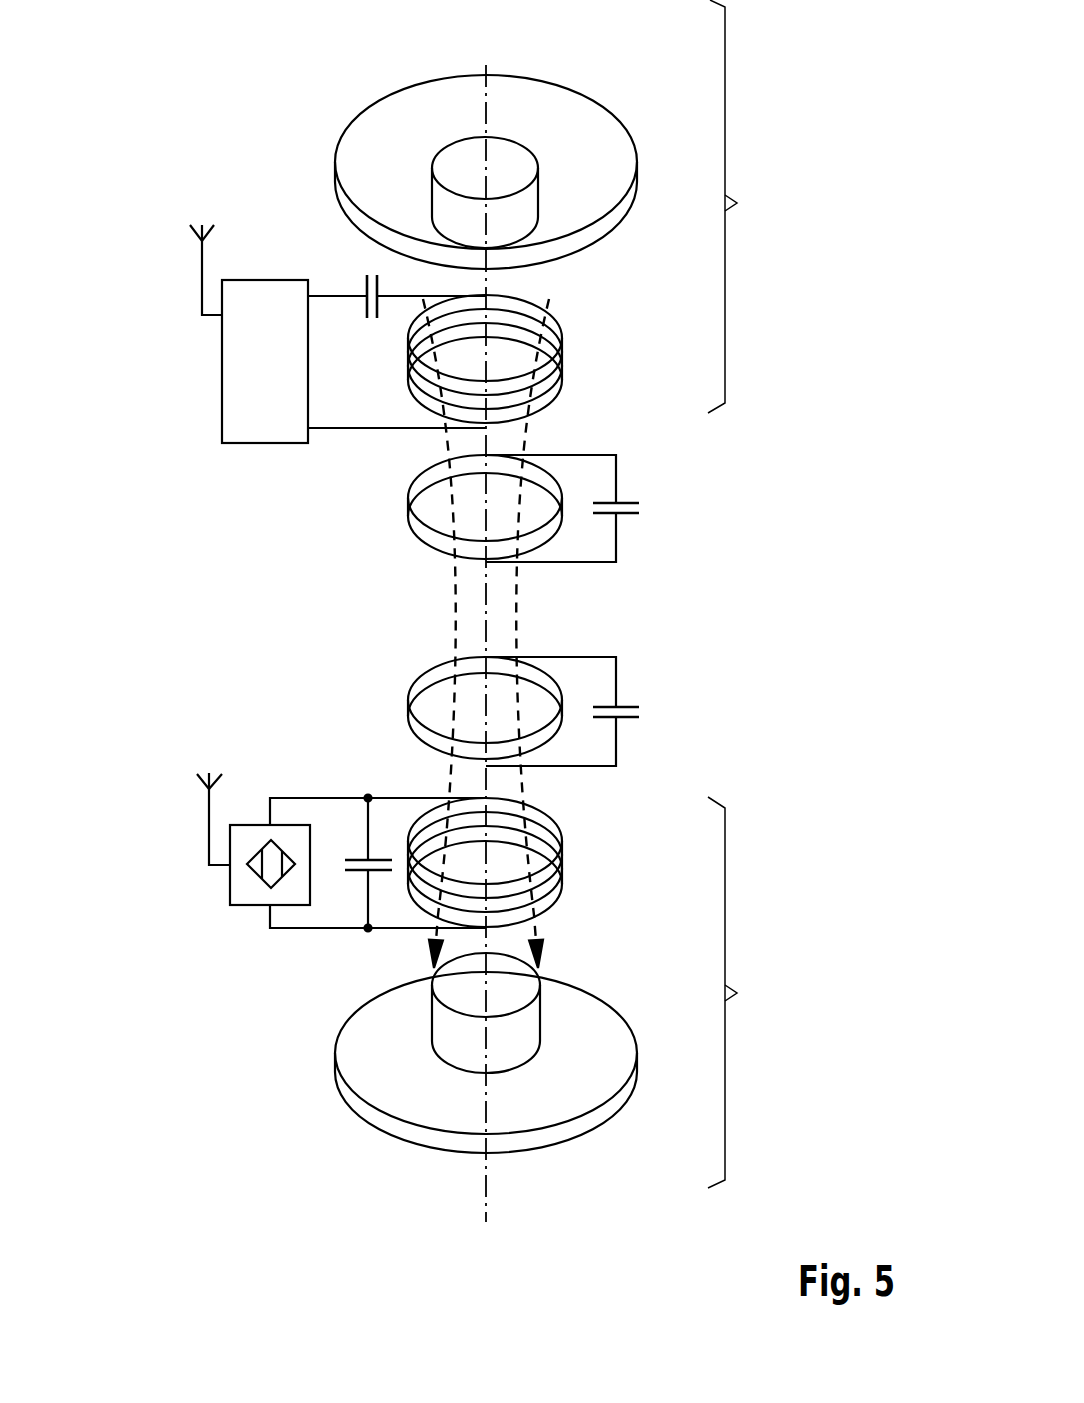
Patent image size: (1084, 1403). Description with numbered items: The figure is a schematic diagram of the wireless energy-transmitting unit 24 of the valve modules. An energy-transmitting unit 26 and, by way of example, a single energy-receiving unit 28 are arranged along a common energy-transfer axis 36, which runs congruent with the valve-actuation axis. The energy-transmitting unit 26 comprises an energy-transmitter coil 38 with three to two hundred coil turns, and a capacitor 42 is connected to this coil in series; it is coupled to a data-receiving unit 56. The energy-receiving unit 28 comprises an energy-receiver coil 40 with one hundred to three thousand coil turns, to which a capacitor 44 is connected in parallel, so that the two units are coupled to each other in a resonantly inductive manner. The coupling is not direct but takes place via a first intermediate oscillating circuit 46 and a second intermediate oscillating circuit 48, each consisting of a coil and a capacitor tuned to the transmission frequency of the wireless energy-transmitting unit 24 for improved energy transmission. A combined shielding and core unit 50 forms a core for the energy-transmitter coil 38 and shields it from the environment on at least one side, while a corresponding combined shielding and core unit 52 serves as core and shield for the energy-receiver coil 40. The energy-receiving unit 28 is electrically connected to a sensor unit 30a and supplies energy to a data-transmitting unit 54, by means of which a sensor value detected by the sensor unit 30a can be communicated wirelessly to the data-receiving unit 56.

The wireless energy-transmitting unit 24 is at (207, 548).
The energy-transmitting unit 26 is at (742, 206).
The energy-receiving unit 28 is at (742, 992).
The sensor unit 30a is at (270, 870).
The energy-transfer axis 36 is at (486, 1197).
The energy-transmitter coil 38 is at (602, 344).
The energy-receiver coil 40 is at (602, 845).
The capacitor 42 is at (398, 279).
The capacitor 44 is at (382, 897).
The first intermediate oscillating circuit 46 is at (665, 507).
The second intermediate oscillating circuit 48 is at (665, 713).
The combined shielding and core unit 50 is at (627, 68).
The combined shielding and core unit 52 is at (629, 1127).
The data-transmitting unit 54 is at (404, 921).
The data-receiving unit 56 is at (404, 334).